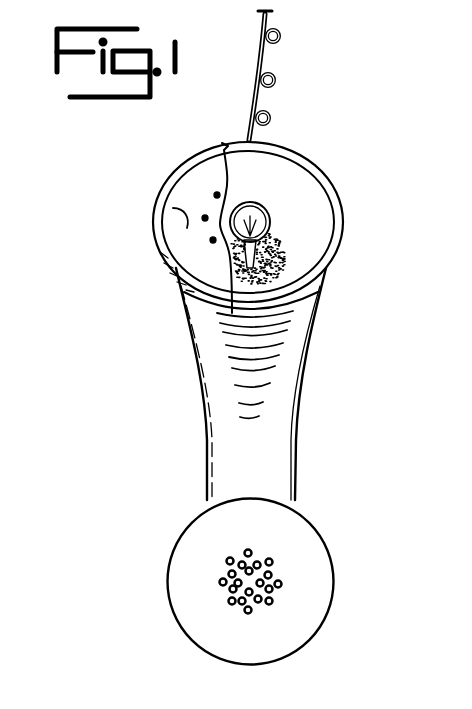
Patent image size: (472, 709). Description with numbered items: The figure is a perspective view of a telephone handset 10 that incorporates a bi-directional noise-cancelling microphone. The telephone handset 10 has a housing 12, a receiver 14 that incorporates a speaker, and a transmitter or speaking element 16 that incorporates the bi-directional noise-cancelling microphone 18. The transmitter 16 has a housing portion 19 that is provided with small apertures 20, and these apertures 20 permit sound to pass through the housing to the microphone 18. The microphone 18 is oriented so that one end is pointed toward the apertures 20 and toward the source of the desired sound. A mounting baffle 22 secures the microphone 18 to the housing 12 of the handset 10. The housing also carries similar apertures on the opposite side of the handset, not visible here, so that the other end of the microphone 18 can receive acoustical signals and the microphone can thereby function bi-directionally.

The telephone handset 10 is at (318, 385).
The housing 12 is at (296, 334).
The receiver 14 is at (302, 548).
The transmitter or speaking element 16 is at (312, 200).
The bi-directional noise-cancelling microphone 18 is at (266, 207).
The housing portion 19 is at (173, 208).
The small apertures 20 is at (204, 217).
The mounting baffle 22 is at (284, 253).